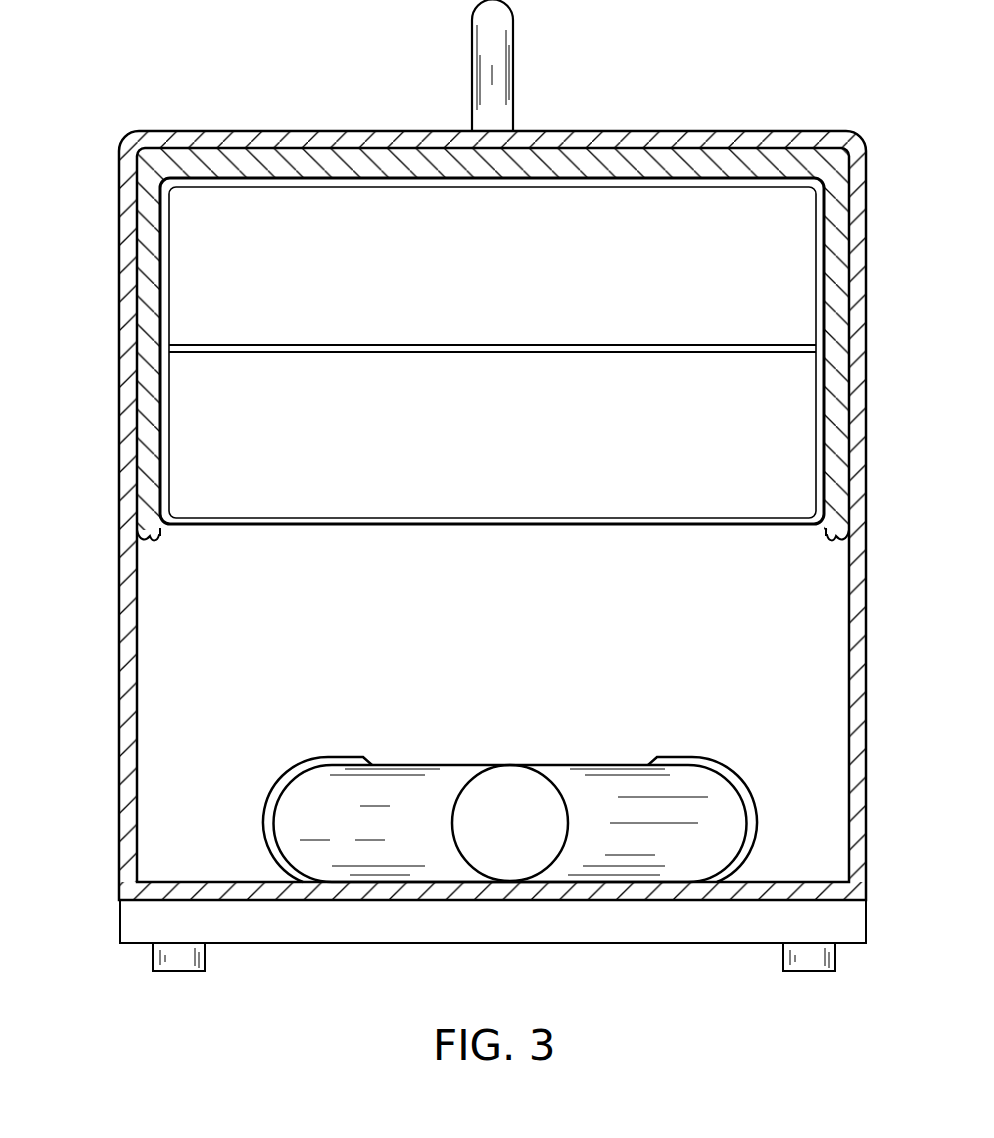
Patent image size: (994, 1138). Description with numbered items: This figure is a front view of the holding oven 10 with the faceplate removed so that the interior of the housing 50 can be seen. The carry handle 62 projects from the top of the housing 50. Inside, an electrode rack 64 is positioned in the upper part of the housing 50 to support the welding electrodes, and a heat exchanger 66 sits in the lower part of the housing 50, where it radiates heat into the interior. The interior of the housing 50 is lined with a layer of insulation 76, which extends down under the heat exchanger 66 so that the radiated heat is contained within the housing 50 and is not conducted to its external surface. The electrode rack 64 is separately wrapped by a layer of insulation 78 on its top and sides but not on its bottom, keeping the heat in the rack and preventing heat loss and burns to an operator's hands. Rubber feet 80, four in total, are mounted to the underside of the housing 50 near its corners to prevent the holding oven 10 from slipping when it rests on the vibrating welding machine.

The holding oven 10 is at (90, 92).
The housing 50 is at (119, 757).
The carry handle 62 is at (513, 57).
The electrode rack 64 is at (589, 528).
The heat exchanger 66 is at (555, 765).
The insulation layer 76 is at (137, 645).
The insulation layer 78 is at (155, 538).
The rubber feet 80 is at (180, 971).